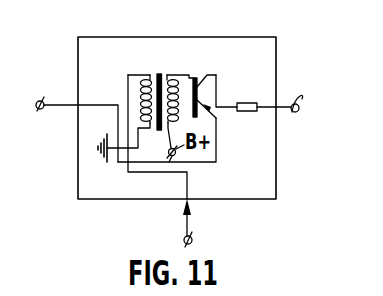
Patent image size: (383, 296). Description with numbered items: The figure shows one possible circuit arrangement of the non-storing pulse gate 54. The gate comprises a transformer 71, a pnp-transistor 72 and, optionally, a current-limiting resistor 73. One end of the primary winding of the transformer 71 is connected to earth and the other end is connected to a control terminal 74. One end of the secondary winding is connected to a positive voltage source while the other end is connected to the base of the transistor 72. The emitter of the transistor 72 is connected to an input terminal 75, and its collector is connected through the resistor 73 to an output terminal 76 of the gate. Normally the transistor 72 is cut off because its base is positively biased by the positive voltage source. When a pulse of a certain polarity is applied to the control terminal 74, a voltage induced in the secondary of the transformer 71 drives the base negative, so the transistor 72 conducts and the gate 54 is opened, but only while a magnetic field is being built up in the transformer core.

The non-storing gate 54 is at (248, 50).
The transformer 71 is at (163, 66).
The pnp-transistor 72 is at (192, 75).
The current-limiting resistor 73 is at (244, 99).
The control terminal 74 is at (192, 238).
The input terminal 75 is at (74, 116).
The output terminal 76 is at (306, 94).